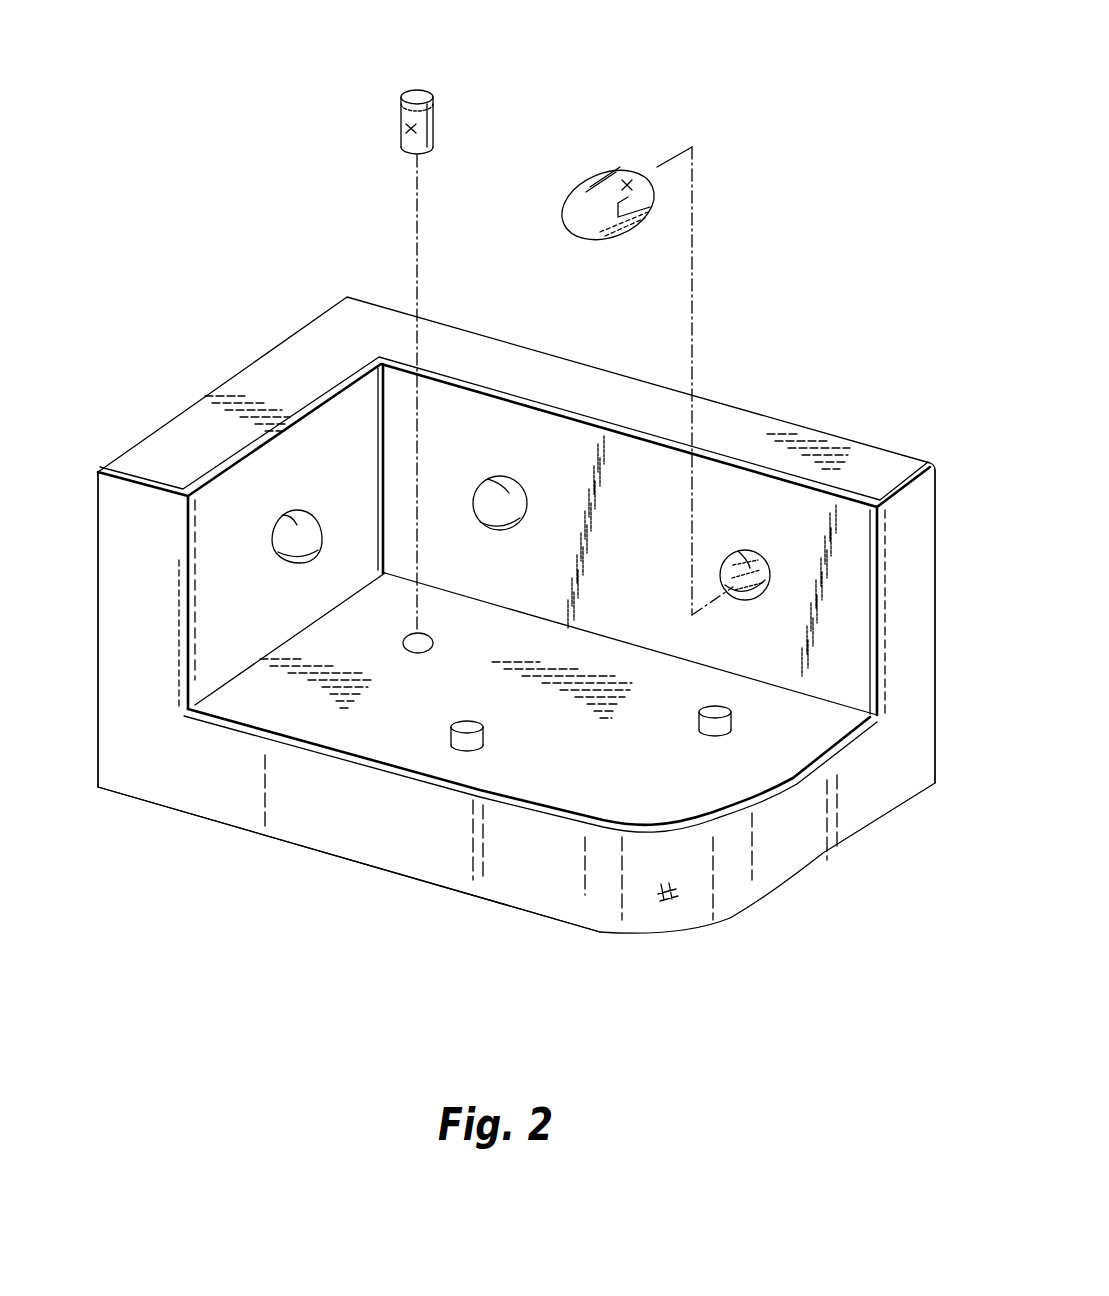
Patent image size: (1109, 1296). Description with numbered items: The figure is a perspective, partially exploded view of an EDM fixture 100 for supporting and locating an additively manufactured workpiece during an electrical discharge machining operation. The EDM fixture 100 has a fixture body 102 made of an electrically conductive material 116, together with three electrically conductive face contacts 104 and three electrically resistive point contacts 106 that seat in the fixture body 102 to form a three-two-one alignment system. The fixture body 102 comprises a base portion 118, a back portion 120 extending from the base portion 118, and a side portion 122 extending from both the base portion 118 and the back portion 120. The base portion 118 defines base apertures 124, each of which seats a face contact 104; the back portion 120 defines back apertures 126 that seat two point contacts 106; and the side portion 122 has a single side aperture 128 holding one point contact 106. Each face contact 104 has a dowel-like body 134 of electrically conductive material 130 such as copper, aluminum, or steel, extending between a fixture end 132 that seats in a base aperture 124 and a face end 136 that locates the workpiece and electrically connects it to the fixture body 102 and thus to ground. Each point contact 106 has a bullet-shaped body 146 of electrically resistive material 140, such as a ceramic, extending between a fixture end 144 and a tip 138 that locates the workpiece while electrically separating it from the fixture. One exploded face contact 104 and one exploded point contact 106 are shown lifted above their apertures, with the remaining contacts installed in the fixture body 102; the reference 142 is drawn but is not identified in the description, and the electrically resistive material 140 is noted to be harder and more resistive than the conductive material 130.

The EDM fixture 100 is at (230, 228).
The fixture body 102 is at (337, 833).
The face contact 104 is at (445, 110).
The point contact 106 is at (587, 140).
The electrically conductive material 116 is at (662, 900).
The base portion 118 is at (533, 875).
The back portion 120 is at (918, 608).
The side portion 122 is at (113, 518).
The base aperture 124 is at (414, 636).
The back aperture 126 is at (507, 478).
The side aperture 128 is at (290, 510).
The electrically conductive material 130 is at (405, 135).
The fixture end 132 is at (427, 150).
The dowel-like body 134 is at (403, 118).
The face end 136 is at (405, 82).
The tip 138 is at (570, 228).
The electrically resistive material 140 is at (627, 183).
The fastener outer surface 142 is at (563, 198).
The fixture end 144 is at (642, 170).
The bullet-shaped body 146 is at (620, 245).